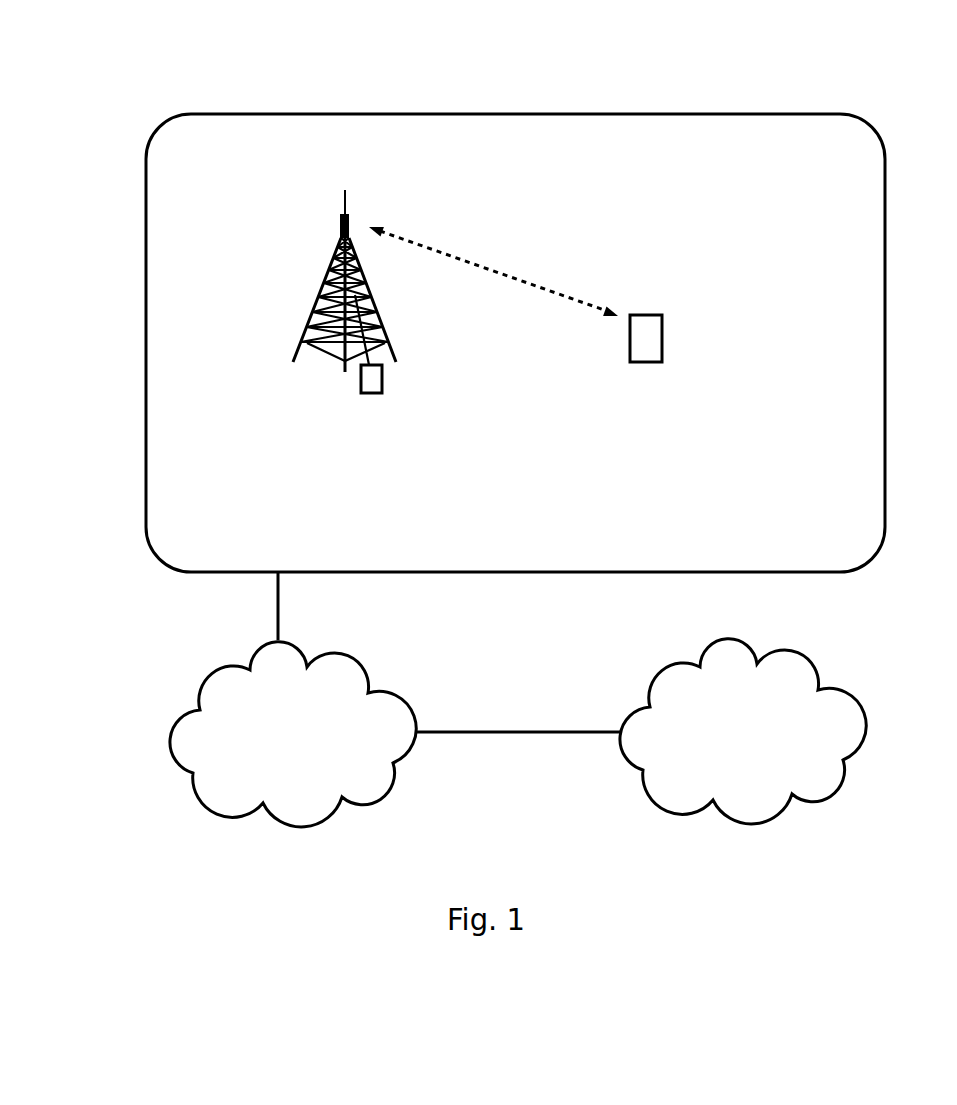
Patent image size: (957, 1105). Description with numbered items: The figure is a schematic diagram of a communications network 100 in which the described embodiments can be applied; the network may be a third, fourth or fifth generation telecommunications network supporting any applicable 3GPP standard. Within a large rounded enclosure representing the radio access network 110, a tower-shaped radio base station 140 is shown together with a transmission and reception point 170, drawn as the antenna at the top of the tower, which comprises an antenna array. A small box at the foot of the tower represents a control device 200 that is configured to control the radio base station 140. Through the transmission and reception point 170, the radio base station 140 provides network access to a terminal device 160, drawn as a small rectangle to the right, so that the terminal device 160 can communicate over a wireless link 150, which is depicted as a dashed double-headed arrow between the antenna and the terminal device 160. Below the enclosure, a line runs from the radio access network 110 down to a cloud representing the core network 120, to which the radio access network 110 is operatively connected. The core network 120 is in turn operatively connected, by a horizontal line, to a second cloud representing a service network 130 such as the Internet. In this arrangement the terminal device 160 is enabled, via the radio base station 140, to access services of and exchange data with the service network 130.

The communications network 100 is at (226, 54).
The radio access network 110 is at (146, 393).
The core network 120 is at (320, 753).
The service network 130 is at (771, 750).
The radio base station 140 is at (247, 193).
The wireless link 150 is at (478, 267).
The terminal device 160 is at (647, 362).
The transmission and reception point 170 is at (343, 207).
The control device 200 is at (361, 380).